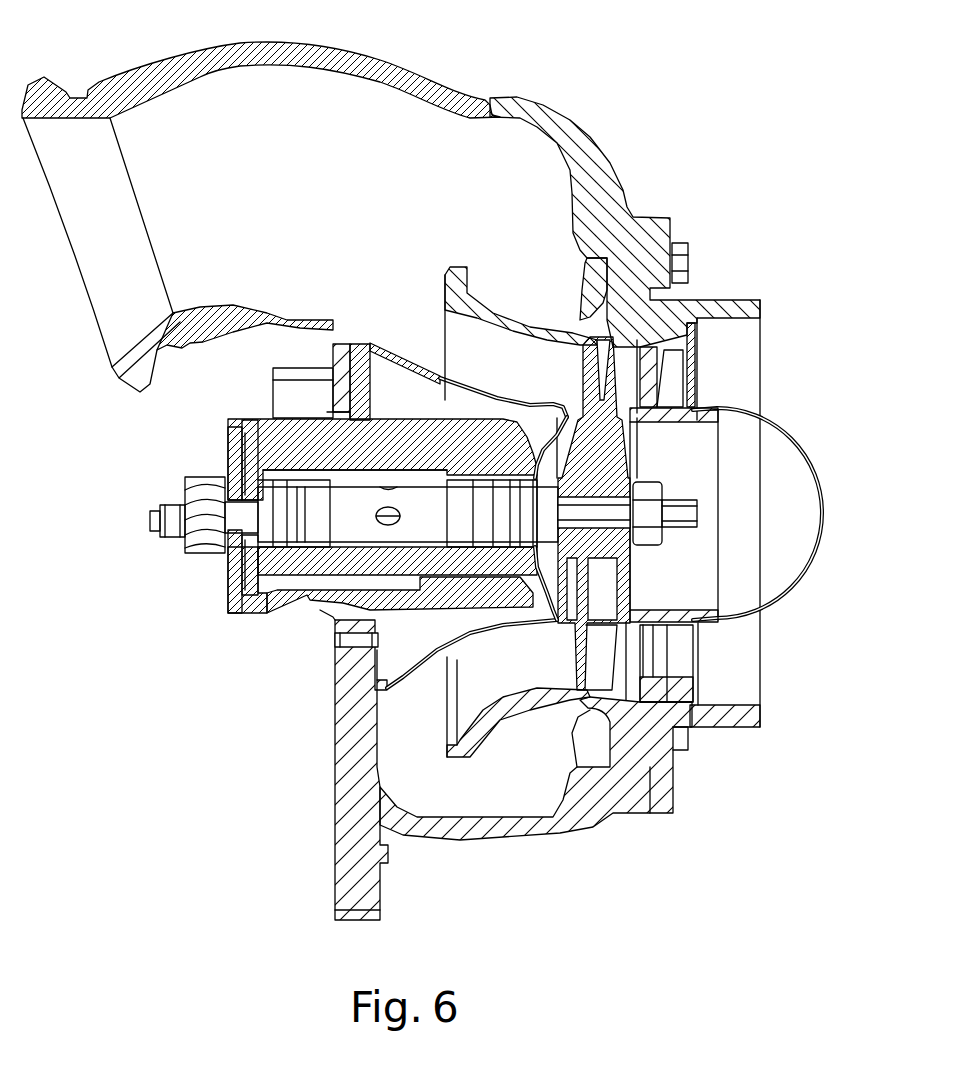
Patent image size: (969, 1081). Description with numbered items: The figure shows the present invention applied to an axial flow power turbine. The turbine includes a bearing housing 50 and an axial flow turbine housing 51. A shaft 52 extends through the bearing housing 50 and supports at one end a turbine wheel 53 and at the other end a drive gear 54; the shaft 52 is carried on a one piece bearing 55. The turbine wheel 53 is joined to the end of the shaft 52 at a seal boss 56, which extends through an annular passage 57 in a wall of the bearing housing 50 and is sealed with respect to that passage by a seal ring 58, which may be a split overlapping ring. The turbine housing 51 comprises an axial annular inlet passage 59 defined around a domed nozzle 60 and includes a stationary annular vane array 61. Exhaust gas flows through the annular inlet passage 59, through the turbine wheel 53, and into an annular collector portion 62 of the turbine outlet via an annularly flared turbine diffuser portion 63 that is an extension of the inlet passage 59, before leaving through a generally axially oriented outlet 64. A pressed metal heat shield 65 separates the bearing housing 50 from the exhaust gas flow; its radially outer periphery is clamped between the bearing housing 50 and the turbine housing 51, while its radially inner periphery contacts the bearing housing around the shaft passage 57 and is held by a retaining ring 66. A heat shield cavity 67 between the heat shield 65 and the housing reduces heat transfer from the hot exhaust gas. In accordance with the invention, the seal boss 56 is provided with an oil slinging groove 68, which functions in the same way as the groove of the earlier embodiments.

The bearing housing 50 is at (273, 433).
The axial flow turbine housing 51 is at (525, 825).
The shaft 52 is at (605, 472).
The turbine wheel 53 is at (668, 690).
The drive gear 54 is at (185, 545).
The one piece bearing 55 is at (263, 547).
The seal boss 56 is at (600, 553).
The annular passage 57 is at (523, 560).
The seal ring 58 is at (537, 447).
The axial annular inlet passage 59 is at (737, 360).
The domed nozzle 60 is at (785, 490).
The stationary annular vane array 61 is at (673, 363).
The annular collector portion 62 is at (410, 753).
The turbine diffuser portion 63 is at (477, 697).
The outlet 64 is at (163, 217).
The heat shield 65 is at (398, 372).
The retaining ring 66 is at (546, 425).
The heat shield cavity 67 is at (410, 385).
The oil slinging groove 68 is at (520, 537).